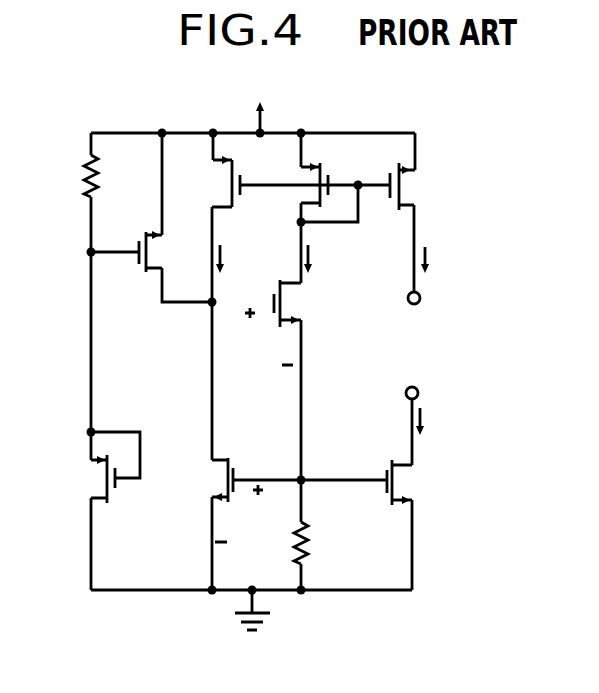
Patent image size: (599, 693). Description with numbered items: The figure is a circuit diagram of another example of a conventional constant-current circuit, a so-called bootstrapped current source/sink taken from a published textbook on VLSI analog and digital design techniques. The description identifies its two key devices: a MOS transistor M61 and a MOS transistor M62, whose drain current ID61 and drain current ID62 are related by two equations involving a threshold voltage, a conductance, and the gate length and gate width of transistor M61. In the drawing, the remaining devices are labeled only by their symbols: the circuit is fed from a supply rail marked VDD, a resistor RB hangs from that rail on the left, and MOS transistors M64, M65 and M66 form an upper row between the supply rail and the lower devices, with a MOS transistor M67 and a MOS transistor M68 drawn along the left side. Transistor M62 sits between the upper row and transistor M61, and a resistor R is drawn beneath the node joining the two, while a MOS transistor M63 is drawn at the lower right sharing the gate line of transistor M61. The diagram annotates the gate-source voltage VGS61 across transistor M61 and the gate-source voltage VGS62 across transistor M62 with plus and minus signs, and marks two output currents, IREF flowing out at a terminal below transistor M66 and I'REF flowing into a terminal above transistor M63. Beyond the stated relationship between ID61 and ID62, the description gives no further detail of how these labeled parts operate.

The positive supply voltage terminal VDD is at (260, 105).
The bias resistor RB is at (110, 176).
The MOS transistor M67 is at (172, 251).
The MOS transistor M64 is at (204, 181).
The MOS transistor M65 is at (287, 190).
The MOS transistor M66 is at (425, 186).
The MOS transistor M62 is at (312, 303).
The MOS transistor M61 is at (198, 480).
The MOS transistor M63 is at (421, 446).
The MOS transistor M68 is at (80, 479).
The resistor R is at (310, 543).
The drain current ID61 is at (242, 260).
The drain current ID62 is at (329, 260).
The reference current output IREF is at (438, 275).
The second reference current output I'REF is at (442, 424).
The gate-source voltage of M62 VGS62 is at (263, 336).
The gate-source voltage of M61 VGS61 is at (244, 513).